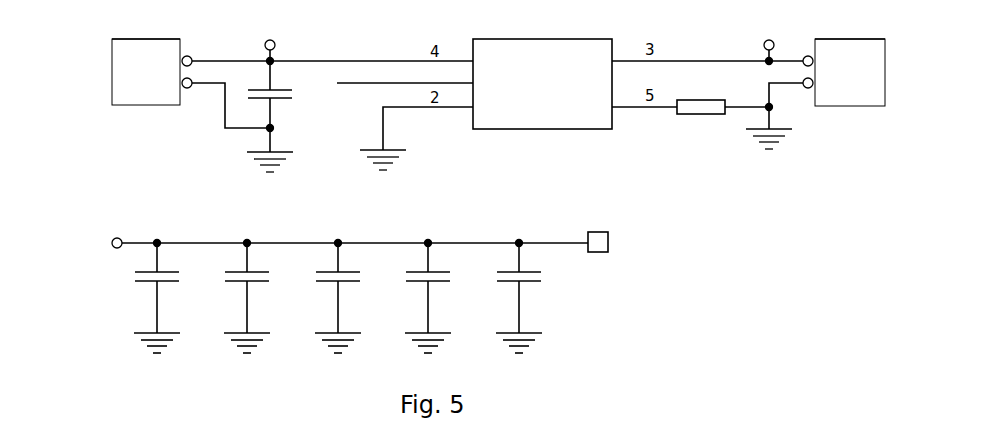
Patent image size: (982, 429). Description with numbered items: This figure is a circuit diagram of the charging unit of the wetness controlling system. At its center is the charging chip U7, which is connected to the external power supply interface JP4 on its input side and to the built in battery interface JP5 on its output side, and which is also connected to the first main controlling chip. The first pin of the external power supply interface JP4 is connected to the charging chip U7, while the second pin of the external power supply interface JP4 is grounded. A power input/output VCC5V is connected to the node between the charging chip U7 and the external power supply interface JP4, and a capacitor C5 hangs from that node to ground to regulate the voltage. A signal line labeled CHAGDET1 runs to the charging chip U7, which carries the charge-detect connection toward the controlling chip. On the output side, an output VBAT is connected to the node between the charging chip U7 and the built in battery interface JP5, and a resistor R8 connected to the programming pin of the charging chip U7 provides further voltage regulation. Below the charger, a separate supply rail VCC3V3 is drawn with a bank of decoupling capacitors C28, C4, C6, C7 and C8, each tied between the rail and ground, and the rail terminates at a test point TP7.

The external power supply interface JP4 is at (152, 62).
The power input/output VCC5V is at (267, 40).
The capacitor C5 is at (282, 116).
The CHAGDET1 net (charge detect) CHAGDET1 is at (405, 73).
The charging chip U7 is at (542, 95).
The resistor R8 is at (690, 96).
The output VBAT is at (765, 40).
The built in battery interface JP5 is at (844, 62).
The VCC3V3 net VCC3V3 is at (77, 244).
The decoupling capacitor C28 is at (173, 298).
The decoupling capacitor C4 is at (257, 298).
The decoupling capacitor C6 is at (348, 298).
The decoupling capacitor C7 is at (439, 298).
The decoupling capacitor C8 is at (530, 298).
The test point TP7 is at (615, 243).